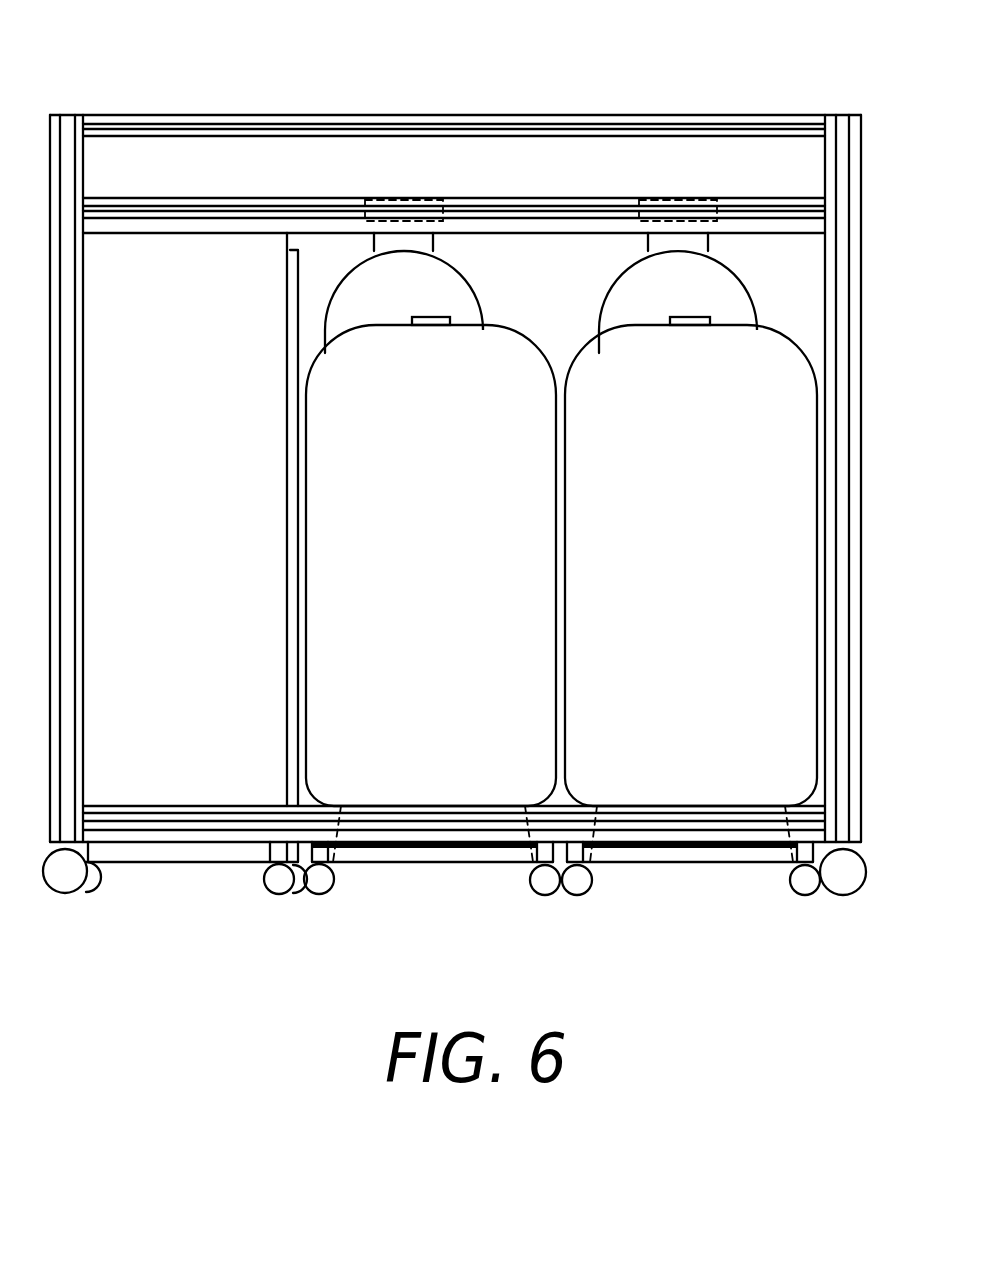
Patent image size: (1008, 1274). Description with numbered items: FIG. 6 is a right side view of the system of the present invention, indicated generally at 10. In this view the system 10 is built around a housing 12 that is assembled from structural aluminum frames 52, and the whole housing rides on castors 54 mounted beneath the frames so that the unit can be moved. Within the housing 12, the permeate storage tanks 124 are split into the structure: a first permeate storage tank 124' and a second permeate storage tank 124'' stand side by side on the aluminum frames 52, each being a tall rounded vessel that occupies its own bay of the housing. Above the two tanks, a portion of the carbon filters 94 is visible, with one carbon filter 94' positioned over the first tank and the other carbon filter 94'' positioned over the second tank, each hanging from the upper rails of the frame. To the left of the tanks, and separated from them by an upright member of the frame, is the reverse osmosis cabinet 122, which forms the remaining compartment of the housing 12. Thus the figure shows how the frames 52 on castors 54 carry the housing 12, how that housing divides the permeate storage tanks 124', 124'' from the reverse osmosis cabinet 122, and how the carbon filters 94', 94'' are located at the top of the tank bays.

The system 10 is at (118, 68).
The housing 12 is at (855, 502).
The structural aluminum frames 52 is at (438, 852).
The castors 54 is at (547, 885).
The carbon filter 94 is at (541, 276).
The carbon filter 94' is at (678, 276).
The carbon filter 94'' is at (404, 276).
The reverse osmosis cabinet 122 is at (205, 558).
The permeate storage tank 124 is at (561, 589).
The permeate storage tank 124' is at (691, 589).
The permeate storage tank 124'' is at (431, 589).